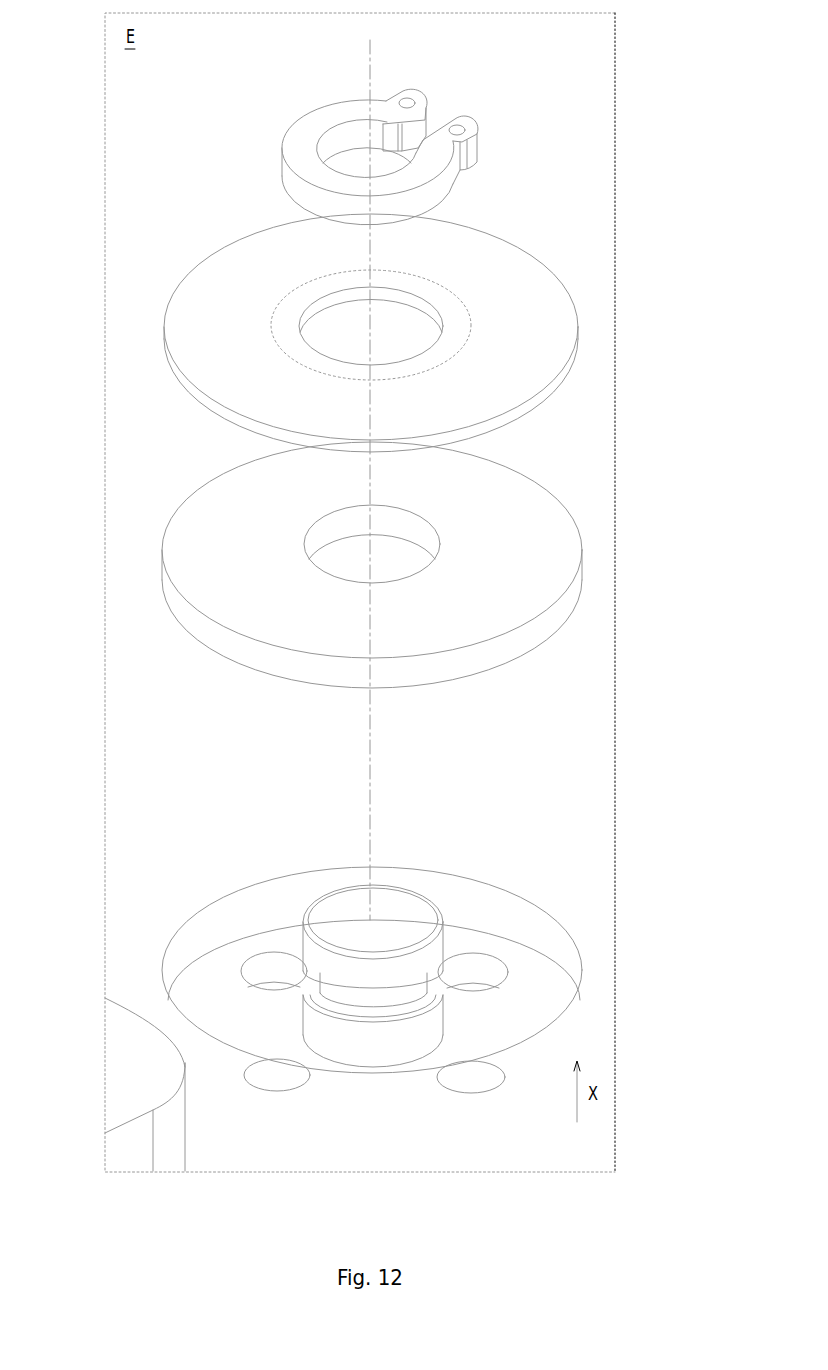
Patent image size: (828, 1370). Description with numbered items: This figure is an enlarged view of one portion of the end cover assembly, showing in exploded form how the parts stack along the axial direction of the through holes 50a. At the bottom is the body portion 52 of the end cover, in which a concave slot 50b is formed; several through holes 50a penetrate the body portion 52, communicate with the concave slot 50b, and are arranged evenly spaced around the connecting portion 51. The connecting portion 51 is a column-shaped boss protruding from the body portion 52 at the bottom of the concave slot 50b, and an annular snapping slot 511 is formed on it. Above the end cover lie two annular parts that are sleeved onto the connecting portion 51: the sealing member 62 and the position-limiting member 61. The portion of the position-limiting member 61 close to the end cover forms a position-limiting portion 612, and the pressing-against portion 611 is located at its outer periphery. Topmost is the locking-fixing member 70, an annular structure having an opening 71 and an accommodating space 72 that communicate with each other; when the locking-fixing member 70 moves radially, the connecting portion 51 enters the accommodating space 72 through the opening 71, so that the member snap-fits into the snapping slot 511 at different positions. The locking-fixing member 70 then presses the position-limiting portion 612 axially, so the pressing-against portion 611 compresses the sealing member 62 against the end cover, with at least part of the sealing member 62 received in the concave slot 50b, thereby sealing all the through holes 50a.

The locking-fixing member 70 is at (350, 139).
The opening 71 is at (432, 115).
The accommodating space 72 is at (348, 162).
The body portion 52 is at (371, 451).
The position-limiting member 61 is at (435, 333).
The pressing-against portion 611 is at (527, 350).
The position-limiting portion 612 is at (455, 327).
The sealing member 62 is at (528, 568).
The concave slot 50b is at (390, 1021).
The through hole 50a is at (270, 972).
The connecting portion 51 is at (489, 937).
The snapping slot 511 is at (407, 993).